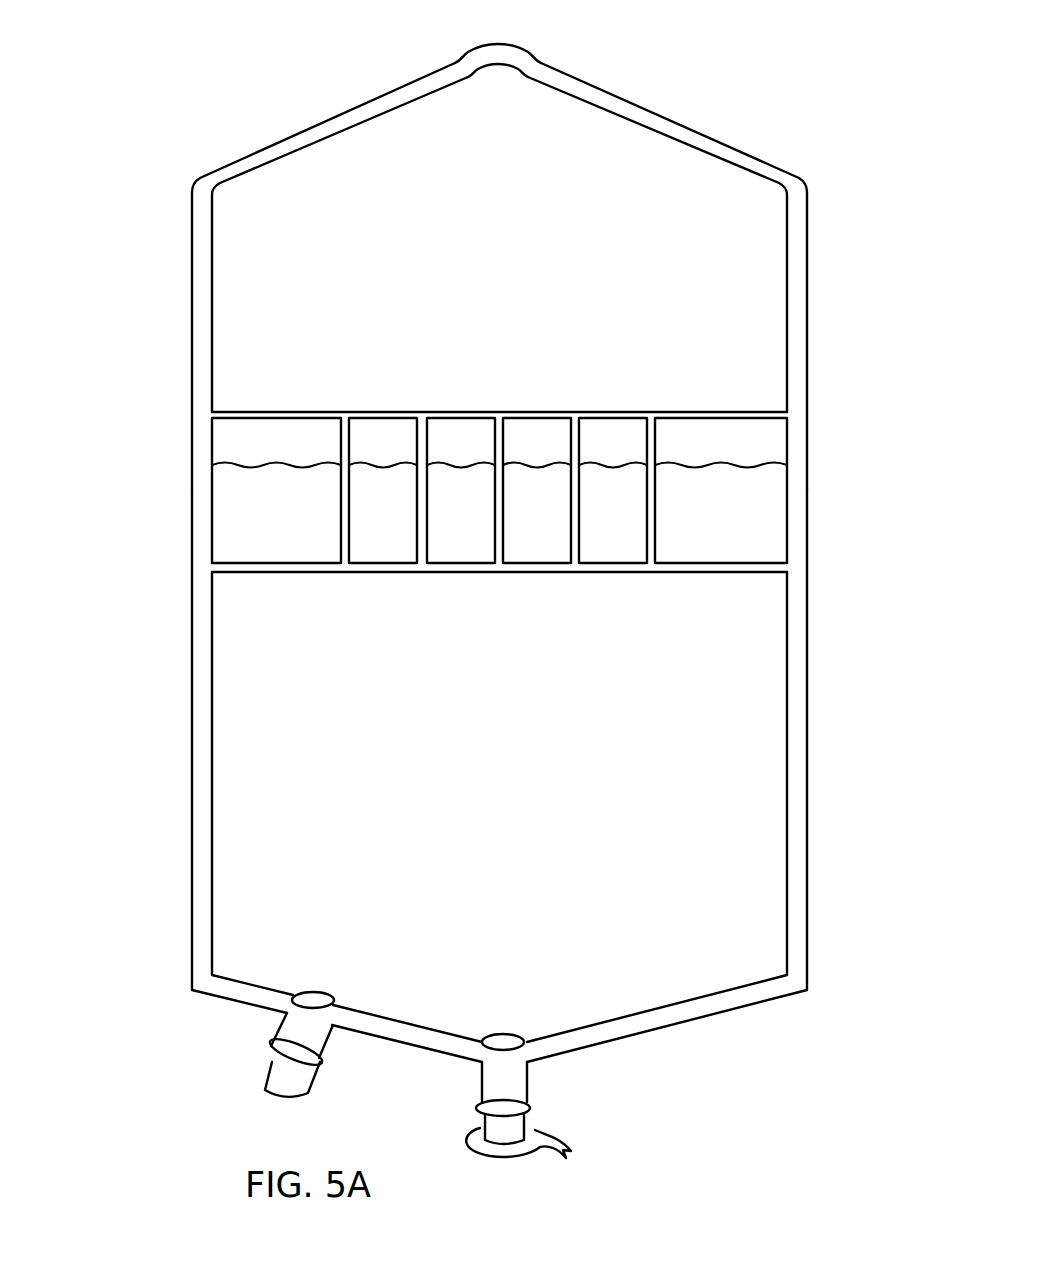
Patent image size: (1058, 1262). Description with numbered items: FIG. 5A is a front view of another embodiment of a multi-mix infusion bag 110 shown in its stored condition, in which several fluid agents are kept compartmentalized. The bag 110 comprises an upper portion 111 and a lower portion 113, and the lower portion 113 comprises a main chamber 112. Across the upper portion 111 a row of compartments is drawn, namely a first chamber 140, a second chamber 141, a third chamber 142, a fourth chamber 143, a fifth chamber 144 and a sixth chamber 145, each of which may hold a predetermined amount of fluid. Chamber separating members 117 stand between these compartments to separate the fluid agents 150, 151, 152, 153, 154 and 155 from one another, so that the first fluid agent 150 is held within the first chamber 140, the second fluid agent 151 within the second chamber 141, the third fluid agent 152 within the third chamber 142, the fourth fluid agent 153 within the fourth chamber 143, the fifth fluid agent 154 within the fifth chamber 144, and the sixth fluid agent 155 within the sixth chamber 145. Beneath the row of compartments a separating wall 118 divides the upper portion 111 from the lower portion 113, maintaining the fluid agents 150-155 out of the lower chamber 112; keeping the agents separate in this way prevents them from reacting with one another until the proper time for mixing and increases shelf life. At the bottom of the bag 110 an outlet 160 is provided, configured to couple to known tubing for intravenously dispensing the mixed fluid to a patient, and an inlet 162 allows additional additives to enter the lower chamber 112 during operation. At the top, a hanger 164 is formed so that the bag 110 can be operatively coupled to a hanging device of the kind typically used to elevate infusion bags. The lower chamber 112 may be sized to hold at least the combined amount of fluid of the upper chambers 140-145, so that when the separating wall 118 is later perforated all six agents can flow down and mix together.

The multi-mix infusion bag 110 is at (723, 72).
The upper portion 111 is at (184, 274).
The main chamber 112 is at (665, 770).
The lower portion 113 is at (172, 694).
The chamber separating members 117 is at (650, 495).
The separating wall 118 is at (735, 567).
The first chamber 140 is at (225, 443).
The second chamber 141 is at (362, 442).
The third chamber 142 is at (438, 442).
The fourth chamber 143 is at (513, 442).
The fifth chamber 144 is at (587, 442).
The sixth chamber 145 is at (770, 440).
The first fluid agent 150 is at (277, 540).
The second fluid agent 151 is at (363, 540).
The third fluid agent 152 is at (437, 540).
The fourth fluid agent 153 is at (514, 540).
The fifth fluid agent 154 is at (590, 540).
The sixth fluid agent 155 is at (663, 540).
The outlet 160 is at (513, 1082).
The inlet 162 is at (283, 1075).
The hanger 164 is at (500, 60).